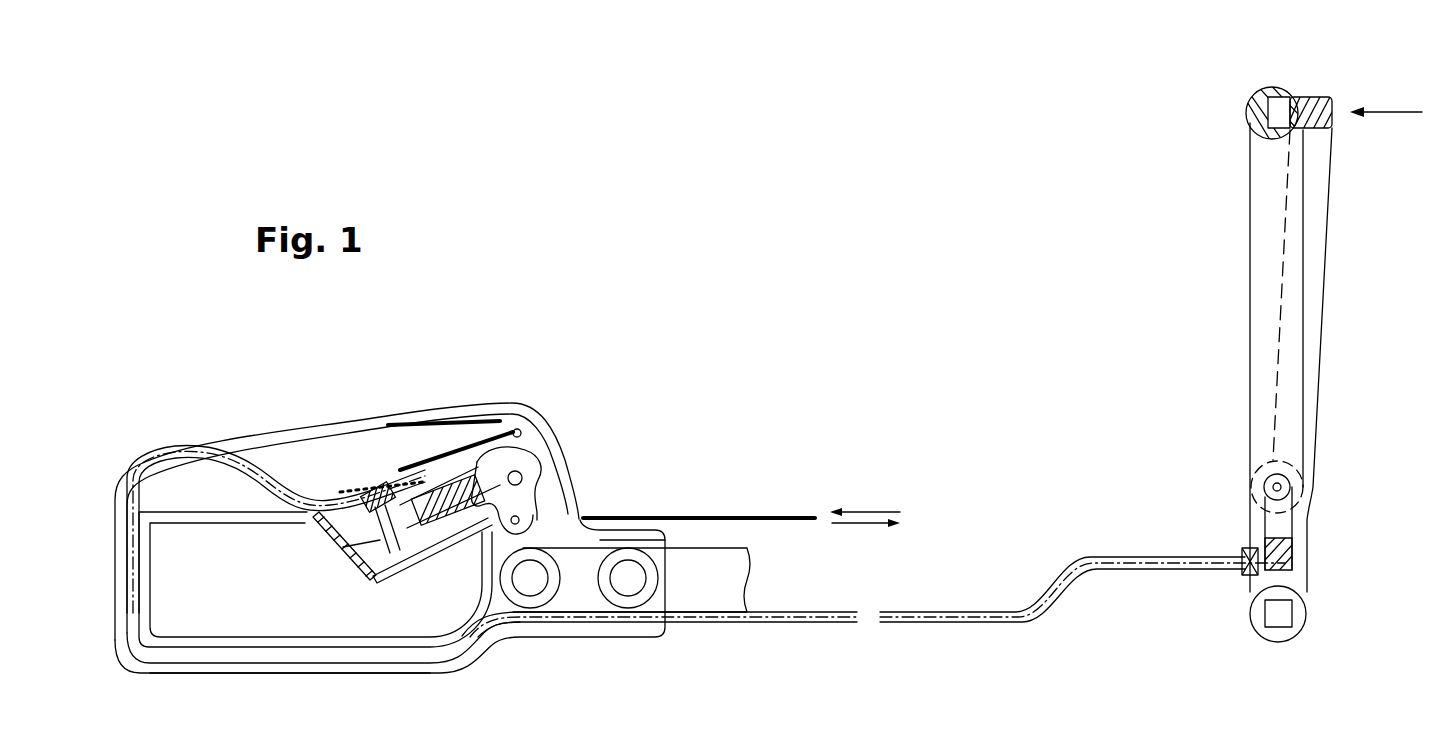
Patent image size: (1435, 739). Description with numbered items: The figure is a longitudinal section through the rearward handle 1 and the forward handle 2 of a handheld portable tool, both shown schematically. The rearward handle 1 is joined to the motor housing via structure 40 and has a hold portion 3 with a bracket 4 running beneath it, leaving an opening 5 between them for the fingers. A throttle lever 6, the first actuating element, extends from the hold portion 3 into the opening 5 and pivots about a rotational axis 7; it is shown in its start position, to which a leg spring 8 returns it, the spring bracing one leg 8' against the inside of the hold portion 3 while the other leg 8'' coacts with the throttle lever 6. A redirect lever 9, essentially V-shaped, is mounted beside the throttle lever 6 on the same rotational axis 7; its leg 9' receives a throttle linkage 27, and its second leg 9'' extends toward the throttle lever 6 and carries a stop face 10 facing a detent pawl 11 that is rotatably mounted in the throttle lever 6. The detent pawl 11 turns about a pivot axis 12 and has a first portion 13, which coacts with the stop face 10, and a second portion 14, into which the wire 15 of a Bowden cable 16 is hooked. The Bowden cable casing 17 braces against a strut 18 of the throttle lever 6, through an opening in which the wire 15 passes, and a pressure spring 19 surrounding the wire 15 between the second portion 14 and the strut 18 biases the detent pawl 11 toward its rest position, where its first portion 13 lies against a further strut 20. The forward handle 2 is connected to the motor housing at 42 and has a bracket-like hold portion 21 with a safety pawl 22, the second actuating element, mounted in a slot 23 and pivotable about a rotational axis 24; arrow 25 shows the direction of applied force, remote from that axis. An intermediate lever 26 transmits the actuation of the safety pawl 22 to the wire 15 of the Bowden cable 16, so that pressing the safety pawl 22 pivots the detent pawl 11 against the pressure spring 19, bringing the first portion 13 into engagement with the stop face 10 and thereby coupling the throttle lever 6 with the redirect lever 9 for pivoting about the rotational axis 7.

The rearward handle 1 is at (144, 434).
The forward handle 2 is at (1244, 246).
The hold portion 3 is at (136, 463).
The bracket 4 is at (190, 668).
The opening 5 is at (214, 606).
The throttle lever 6 is at (374, 581).
The rotational axis 7 is at (523, 478).
The leg spring 8 is at (478, 429).
The leg 8' is at (460, 392).
The leg 8'' is at (363, 422).
The redirect lever 9 is at (535, 474).
The leg 9' is at (564, 501).
The second leg 9'' is at (546, 406).
The stop face 10 is at (513, 570).
The detent pawl 11 is at (482, 478).
The pivot axis 12 is at (413, 472).
The first portion 13 is at (453, 546).
The second portion 14 is at (430, 465).
The wire 15 is at (465, 442).
The Bowden cable 16 is at (208, 450).
The Bowden cable casing 17 is at (270, 490).
The strut 18 is at (333, 555).
The pressure spring 19 is at (393, 475).
The further strut 20 is at (412, 557).
The hold portion 21 is at (1255, 374).
The safety pawl 22 is at (1333, 124).
The slot 23 is at (1284, 96).
The rotational axis 24 is at (1284, 488).
The arrow 25 is at (1402, 112).
The intermediate lever 26 is at (1293, 530).
The throttle linkage 27 is at (706, 517).
The structure 40 is at (750, 572).
The connection 42 is at (1298, 621).